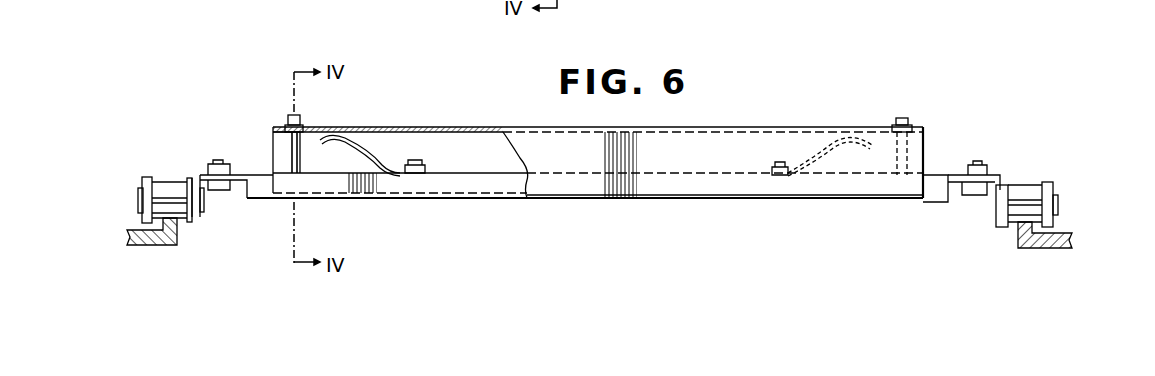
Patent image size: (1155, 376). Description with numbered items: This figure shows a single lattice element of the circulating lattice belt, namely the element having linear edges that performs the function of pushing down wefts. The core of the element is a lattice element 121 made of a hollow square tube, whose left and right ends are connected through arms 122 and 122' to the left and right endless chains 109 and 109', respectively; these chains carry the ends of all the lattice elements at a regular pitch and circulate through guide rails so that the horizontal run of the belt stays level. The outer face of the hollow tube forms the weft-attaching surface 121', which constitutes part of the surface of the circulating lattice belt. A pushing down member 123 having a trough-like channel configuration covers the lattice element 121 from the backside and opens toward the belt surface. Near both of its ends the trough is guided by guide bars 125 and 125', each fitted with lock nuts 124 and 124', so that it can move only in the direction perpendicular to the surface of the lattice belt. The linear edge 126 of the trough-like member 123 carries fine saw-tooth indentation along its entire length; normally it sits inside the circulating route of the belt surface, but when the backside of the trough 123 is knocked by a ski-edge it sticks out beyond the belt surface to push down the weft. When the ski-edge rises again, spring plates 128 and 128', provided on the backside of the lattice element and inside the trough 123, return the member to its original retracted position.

The left endless chain 109 is at (168, 182).
The right endless chain 109' is at (1030, 189).
The lattice element 121 is at (944, 171).
The weft-attaching surface 121' is at (585, 182).
The arm 122 is at (219, 164).
The arm 122' is at (977, 159).
The pushing down member 123 is at (452, 127).
The lock nut 124 is at (318, 135).
The lock nut 124' is at (927, 136).
The guide bar 125 is at (265, 150).
The guide bar 125' is at (876, 145).
The linear edge 126 is at (545, 199).
The spring plate 128 is at (371, 155).
The spring plate 128' is at (822, 186).